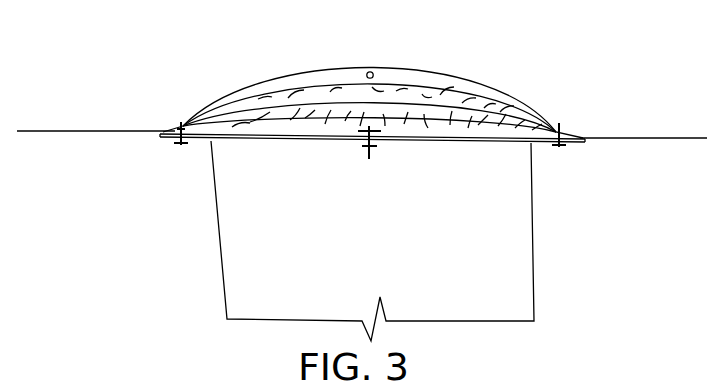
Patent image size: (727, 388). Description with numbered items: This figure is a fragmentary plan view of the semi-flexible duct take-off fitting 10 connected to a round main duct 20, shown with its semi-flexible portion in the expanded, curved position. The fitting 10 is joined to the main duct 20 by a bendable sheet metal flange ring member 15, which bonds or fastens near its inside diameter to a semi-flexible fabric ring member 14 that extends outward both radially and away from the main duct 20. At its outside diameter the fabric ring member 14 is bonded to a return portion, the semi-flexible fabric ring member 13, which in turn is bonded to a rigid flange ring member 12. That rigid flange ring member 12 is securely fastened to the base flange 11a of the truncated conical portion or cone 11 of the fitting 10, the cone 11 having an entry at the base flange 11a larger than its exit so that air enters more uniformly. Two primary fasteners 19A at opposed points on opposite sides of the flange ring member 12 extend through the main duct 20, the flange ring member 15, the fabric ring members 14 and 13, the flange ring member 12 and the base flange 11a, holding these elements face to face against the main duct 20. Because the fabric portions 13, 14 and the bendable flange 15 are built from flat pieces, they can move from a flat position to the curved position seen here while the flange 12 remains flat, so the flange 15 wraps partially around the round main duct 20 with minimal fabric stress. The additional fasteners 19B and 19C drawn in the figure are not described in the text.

The semi-flexible duct take-off fitting 10 is at (106, 280).
The truncated conical portion 11 is at (220, 271).
The base flange 11a is at (233, 143).
The rigid flange ring member 12 is at (217, 124).
The semi-flexible fabric ring member 13 is at (275, 120).
The semi-flexible fabric ring member 14 is at (303, 92).
The bendable sheet metal flange ring member 15 is at (358, 67).
The primary fasteners 19A is at (178, 147).
The vent opening 19B is at (376, 70).
The central fastener 19C is at (368, 160).
The round main duct 20 is at (637, 140).